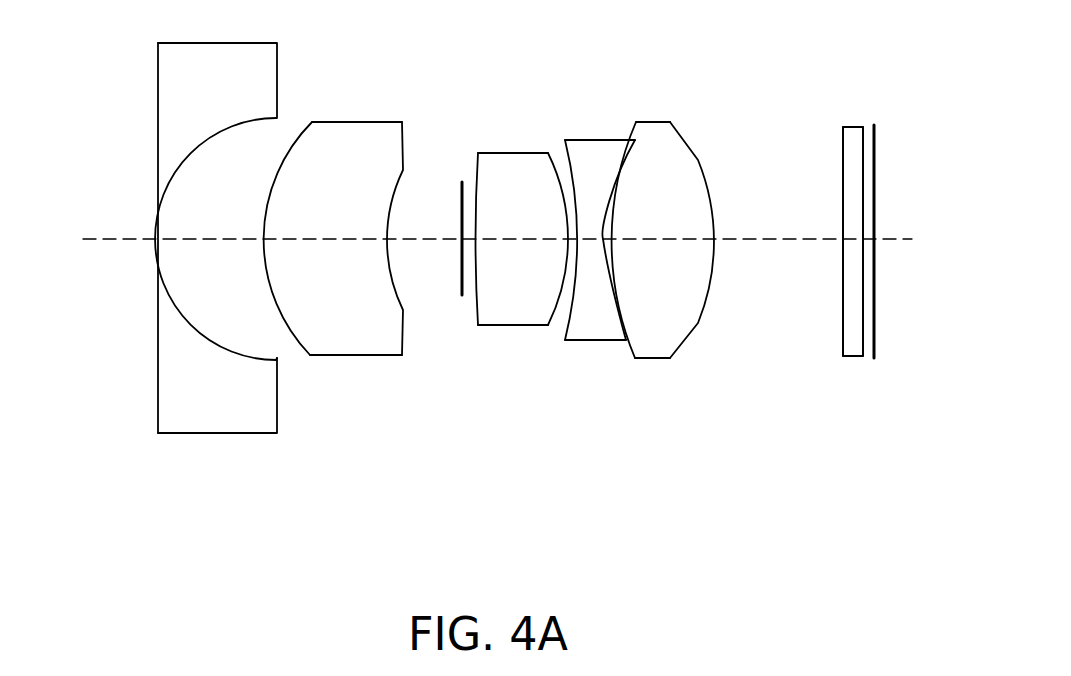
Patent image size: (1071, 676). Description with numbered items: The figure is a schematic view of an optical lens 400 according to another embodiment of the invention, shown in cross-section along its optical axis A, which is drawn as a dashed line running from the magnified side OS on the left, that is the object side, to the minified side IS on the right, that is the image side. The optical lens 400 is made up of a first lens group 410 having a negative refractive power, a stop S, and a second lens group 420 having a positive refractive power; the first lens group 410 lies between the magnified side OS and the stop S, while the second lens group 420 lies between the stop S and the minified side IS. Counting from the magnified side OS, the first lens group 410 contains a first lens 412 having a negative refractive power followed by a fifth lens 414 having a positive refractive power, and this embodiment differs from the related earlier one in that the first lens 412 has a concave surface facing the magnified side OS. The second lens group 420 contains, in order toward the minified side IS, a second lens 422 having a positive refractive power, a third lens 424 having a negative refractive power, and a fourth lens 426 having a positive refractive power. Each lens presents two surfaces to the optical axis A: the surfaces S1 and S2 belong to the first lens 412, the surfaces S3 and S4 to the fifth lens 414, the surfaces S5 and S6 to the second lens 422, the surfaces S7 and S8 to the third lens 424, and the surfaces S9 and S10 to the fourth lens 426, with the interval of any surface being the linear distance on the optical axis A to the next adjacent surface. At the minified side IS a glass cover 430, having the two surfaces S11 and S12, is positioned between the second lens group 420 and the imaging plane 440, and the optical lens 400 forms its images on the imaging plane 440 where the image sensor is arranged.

The optical lens 400 is at (488, 286).
The first lens group 410 is at (268, 286).
The first lens 412 is at (205, 258).
The fifth lens 414 is at (343, 269).
The second lens group 420 is at (579, 262).
The second lens 422 is at (506, 233).
The third lens 424 is at (592, 233).
The fourth lens 426 is at (663, 243).
The glass cover 430 is at (839, 244).
The imaging plane 440 is at (875, 333).
The stop S is at (457, 280).
The optical axis A is at (488, 272).
The magnified side OS is at (122, 239).
The minified side IS is at (868, 241).
The surface S1 is at (157, 112).
The surface S2 is at (262, 128).
The surface S3 is at (284, 160).
The surface S4 is at (400, 180).
The surface S5 is at (475, 167).
The surface S6 is at (557, 160).
The surface S7 is at (572, 195).
The surface S8 is at (618, 172).
The surface S9 is at (630, 137).
The surface S10 is at (703, 167).
The surface S11 is at (843, 158).
The surface S12 is at (873, 147).